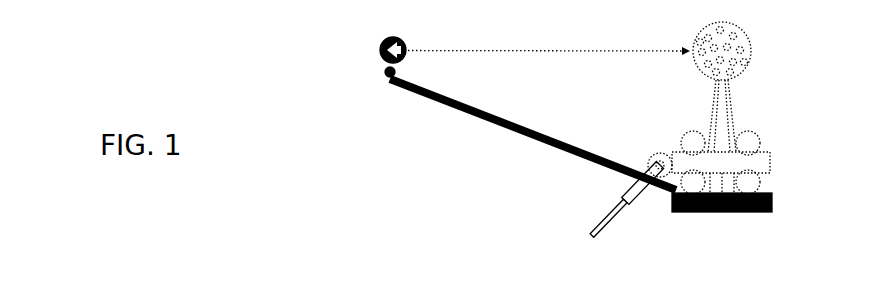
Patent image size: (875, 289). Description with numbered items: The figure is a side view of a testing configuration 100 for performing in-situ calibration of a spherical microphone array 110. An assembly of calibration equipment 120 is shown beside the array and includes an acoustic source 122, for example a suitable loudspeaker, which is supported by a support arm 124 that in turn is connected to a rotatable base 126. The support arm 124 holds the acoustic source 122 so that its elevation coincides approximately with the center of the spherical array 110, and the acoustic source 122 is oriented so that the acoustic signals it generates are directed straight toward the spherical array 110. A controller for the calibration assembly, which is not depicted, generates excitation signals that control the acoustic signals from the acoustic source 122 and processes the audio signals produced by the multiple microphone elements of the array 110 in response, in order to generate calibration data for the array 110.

The testing configuration 100 is at (300, 160).
The spherical microphone array 110 is at (752, 48).
The assembly of calibration equipment 120 is at (484, 156).
The acoustic source 122 is at (378, 47).
The support arm 124 is at (556, 143).
The rotatable base 126 is at (773, 200).